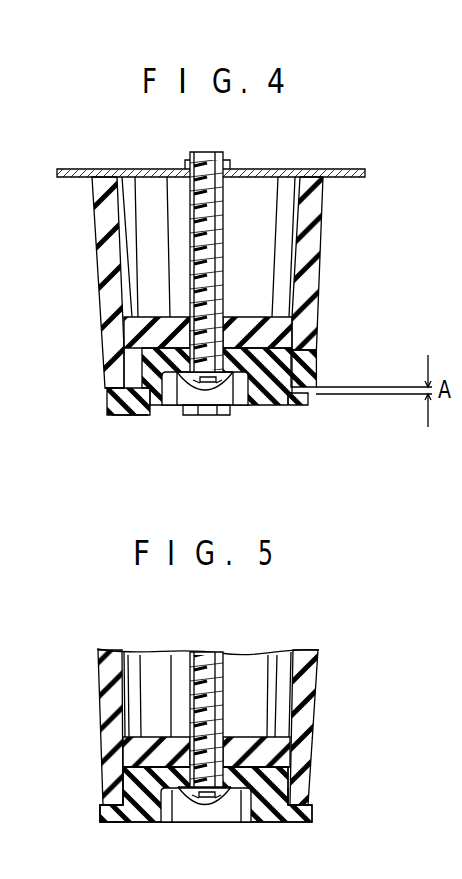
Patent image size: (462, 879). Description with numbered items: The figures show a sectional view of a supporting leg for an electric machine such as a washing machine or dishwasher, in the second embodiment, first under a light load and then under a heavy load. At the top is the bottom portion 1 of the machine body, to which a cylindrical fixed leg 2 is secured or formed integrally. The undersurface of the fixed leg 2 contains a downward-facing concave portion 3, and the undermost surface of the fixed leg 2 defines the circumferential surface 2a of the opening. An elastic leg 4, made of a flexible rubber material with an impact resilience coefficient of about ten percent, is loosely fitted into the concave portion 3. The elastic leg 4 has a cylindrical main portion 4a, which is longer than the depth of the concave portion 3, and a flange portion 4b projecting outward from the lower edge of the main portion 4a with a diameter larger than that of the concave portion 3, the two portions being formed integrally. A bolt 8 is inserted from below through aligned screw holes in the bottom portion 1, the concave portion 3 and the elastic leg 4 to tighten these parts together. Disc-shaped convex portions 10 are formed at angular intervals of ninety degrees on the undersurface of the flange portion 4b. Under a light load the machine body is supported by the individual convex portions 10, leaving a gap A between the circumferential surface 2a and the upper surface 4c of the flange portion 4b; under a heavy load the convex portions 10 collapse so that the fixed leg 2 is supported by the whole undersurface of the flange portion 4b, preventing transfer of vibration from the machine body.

In FIG. 4, the bottom portion 1 is at (102, 168).
In FIG. 4, the fixed leg 2 is at (95, 262).
In FIG. 5, the fixed leg 2 is at (102, 707).
In FIG. 4, the circumferential surface of the opening 2a is at (112, 388).
In FIG. 4, the concave portion 3 is at (295, 352).
In FIG. 5, the concave portion 3 is at (206, 752).
In FIG. 4, the elastic leg 4 is at (235, 368).
In FIG. 5, the elastic leg 4 is at (242, 777).
In FIG. 4, the main portion 4a is at (272, 377).
In FIG. 5, the main portion 4a is at (270, 800).
In FIG. 4, the flange portion 4b is at (112, 408).
In FIG. 5, the flange portion 4b is at (103, 813).
In FIG. 4, the upper surface of the flange portion 4c is at (296, 397).
In FIG. 4, the bolt 8 is at (215, 247).
In FIG. 5, the bolt 8 is at (217, 705).
In FIG. 4, the convex portions 10 is at (138, 416).